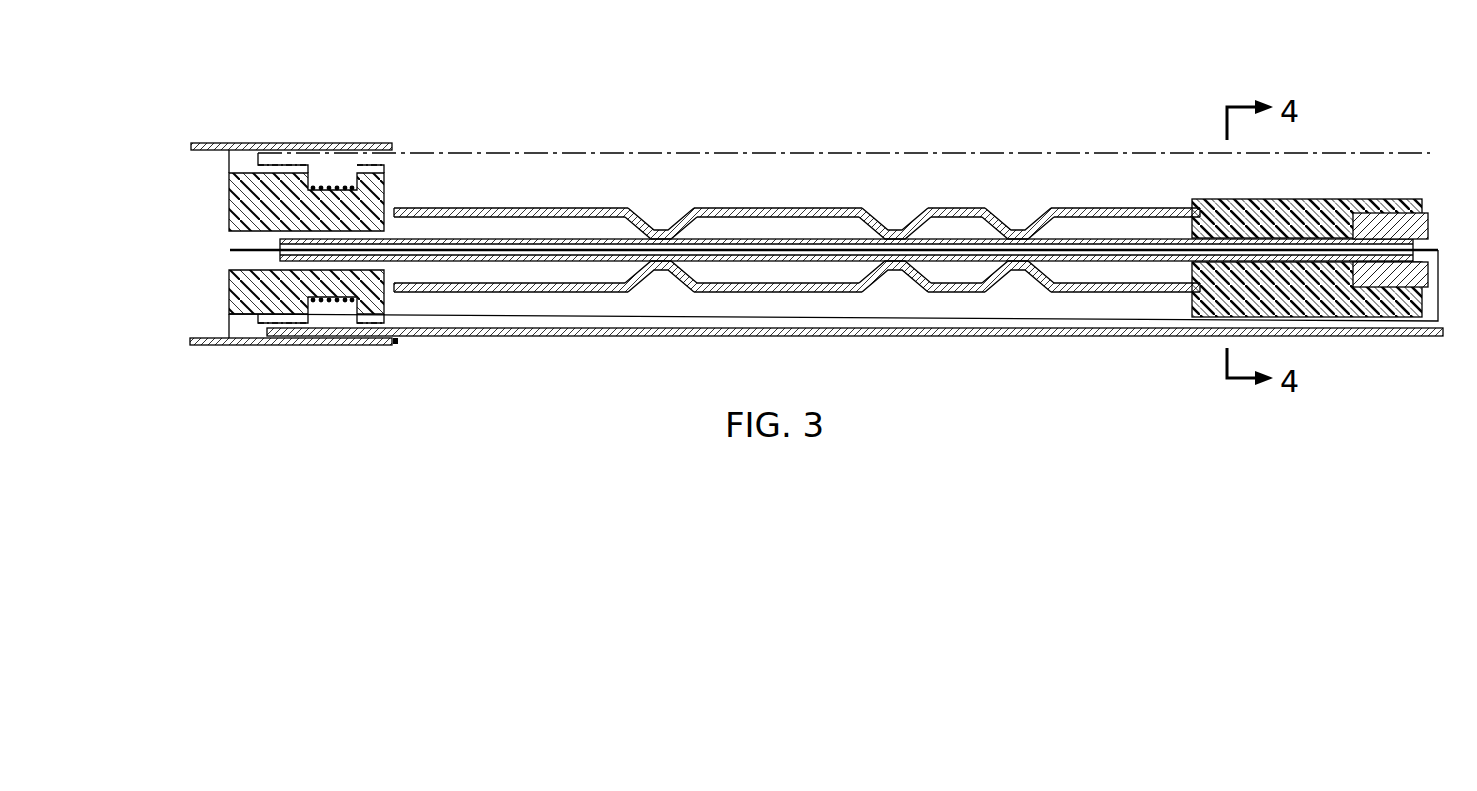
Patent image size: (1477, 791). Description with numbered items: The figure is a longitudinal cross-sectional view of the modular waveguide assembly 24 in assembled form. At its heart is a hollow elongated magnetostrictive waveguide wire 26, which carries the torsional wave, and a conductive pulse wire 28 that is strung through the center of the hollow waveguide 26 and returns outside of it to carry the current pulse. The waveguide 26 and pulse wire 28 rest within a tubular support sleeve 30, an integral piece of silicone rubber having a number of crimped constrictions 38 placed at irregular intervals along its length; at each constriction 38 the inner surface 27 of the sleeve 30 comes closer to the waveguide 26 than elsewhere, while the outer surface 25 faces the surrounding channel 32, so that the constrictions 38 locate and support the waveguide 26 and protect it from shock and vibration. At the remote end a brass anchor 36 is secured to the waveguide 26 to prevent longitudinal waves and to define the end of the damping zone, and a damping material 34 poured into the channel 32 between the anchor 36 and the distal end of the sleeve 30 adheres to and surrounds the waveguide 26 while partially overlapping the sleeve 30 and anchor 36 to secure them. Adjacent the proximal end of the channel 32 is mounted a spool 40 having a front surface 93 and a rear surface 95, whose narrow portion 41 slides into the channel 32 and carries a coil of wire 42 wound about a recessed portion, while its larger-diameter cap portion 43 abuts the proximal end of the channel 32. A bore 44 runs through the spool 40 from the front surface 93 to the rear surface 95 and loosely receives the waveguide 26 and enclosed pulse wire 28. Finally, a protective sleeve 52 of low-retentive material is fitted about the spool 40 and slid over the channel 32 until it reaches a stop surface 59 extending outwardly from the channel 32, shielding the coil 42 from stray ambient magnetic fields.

The modular waveguide assembly 24 is at (1157, 101).
The outer surface of the sleeve 25 is at (603, 292).
The magnetostrictive waveguide wire 26 is at (747, 240).
The inner surface of the sleeve 27 is at (482, 226).
The pulse wire 28 is at (230, 252).
The tubular support sleeve 30 is at (534, 207).
The channel 32 is at (805, 151).
The damping material 34 is at (1330, 207).
The brass anchor 36 is at (1427, 212).
The constrictions 38 is at (660, 222).
The spool 40 is at (214, 308).
The narrow portion 41 is at (267, 308).
The coil of wire 42 is at (330, 186).
The cap portion 43 is at (274, 170).
The bore 44 is at (226, 242).
The protective sleeve 52 is at (364, 148).
The stop surface 59 is at (396, 343).
The front surface 93 is at (228, 187).
The rear surface 95 is at (386, 187).